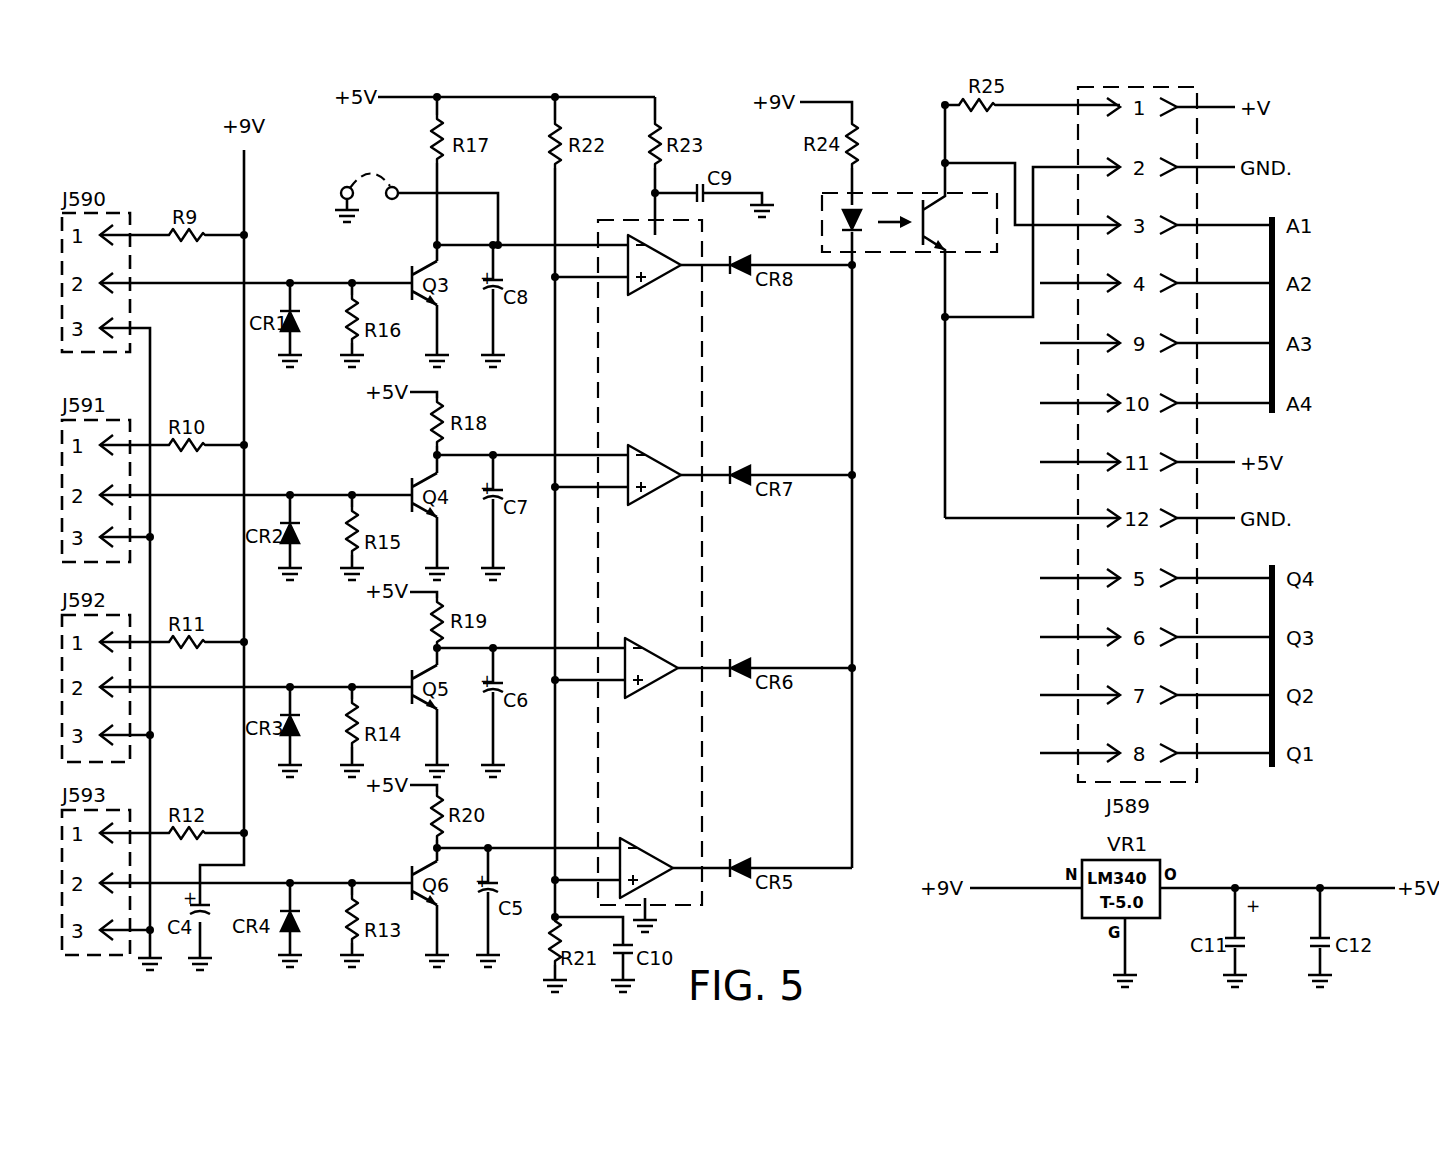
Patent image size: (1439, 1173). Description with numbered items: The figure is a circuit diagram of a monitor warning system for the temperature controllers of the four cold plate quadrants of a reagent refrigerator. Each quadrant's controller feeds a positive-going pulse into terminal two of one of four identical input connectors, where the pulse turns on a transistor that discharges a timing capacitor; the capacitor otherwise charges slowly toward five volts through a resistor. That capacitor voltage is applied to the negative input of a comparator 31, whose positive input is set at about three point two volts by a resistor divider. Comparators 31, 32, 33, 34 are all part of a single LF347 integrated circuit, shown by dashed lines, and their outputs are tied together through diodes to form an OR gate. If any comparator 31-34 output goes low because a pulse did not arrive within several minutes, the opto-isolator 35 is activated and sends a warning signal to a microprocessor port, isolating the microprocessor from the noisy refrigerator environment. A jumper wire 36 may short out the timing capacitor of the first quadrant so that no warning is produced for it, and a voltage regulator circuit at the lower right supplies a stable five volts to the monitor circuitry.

The comparator 31 is at (644, 295).
The comparator 32 is at (650, 492).
The comparator 33 is at (648, 687).
The comparator 34 is at (645, 848).
The opto-isolator 35 is at (900, 252).
The jumper wire 36 is at (374, 173).